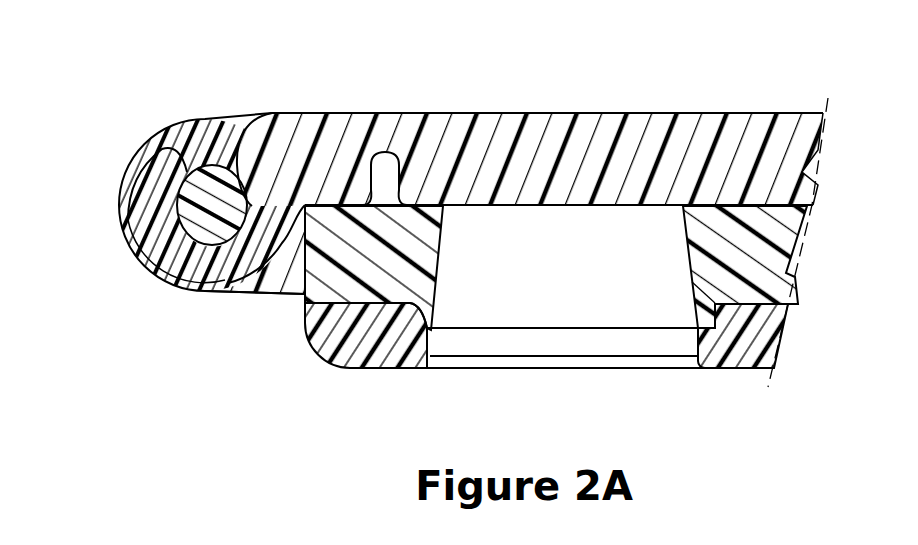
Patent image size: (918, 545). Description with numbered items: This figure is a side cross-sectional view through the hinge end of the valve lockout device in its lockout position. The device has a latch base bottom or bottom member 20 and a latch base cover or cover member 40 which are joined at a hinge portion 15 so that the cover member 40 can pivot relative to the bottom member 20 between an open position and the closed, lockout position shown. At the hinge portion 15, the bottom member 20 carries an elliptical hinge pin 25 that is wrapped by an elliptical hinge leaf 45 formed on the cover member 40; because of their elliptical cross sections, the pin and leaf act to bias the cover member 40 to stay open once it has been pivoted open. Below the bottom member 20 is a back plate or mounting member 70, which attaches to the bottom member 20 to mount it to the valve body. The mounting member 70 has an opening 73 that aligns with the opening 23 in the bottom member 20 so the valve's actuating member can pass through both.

The hinge portion 15 is at (164, 110).
The bottom member 20 is at (266, 312).
The opening 23 is at (438, 265).
The elliptical hinge pin 25 is at (186, 225).
The cover member 40 is at (378, 106).
The elliptical hinge leaf 45 is at (143, 217).
The mounting member 70 is at (356, 350).
The opening 73 is at (432, 346).